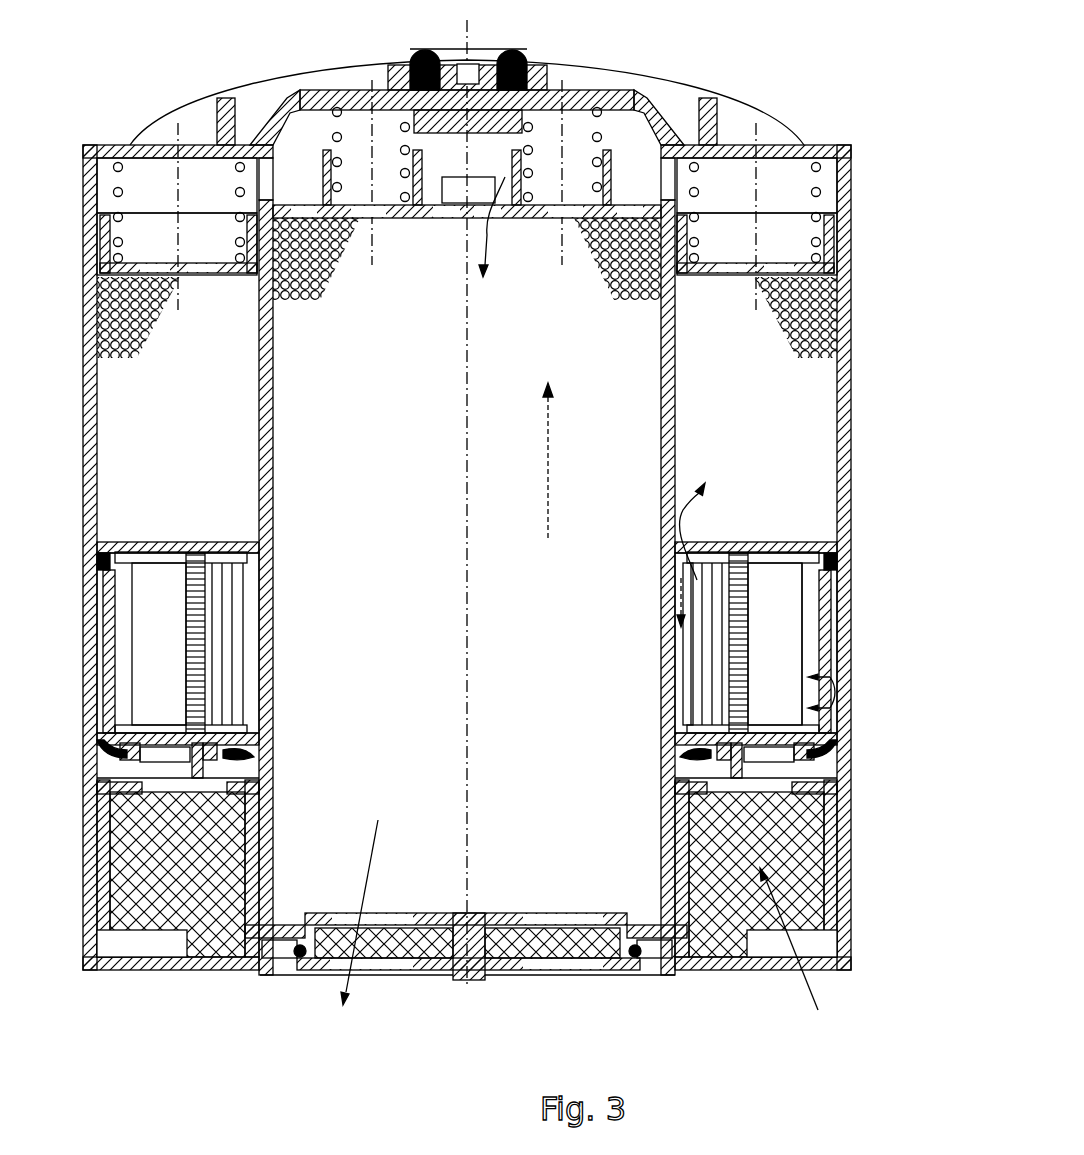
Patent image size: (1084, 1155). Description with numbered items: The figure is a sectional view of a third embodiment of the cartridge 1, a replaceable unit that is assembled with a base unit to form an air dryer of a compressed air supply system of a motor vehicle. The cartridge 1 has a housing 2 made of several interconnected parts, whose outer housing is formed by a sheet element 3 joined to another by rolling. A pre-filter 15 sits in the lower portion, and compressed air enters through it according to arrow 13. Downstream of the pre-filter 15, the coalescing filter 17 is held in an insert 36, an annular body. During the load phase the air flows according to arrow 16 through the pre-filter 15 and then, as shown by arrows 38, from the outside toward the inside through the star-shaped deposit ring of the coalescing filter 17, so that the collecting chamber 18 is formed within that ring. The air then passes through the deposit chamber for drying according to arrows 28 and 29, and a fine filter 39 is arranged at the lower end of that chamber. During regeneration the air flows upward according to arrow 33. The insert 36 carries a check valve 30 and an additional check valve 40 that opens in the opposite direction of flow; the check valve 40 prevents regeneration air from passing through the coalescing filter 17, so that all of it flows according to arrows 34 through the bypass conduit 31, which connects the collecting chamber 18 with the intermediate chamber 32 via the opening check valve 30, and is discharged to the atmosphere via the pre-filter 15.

The cartridge 1 is at (746, 75).
The housing 2 is at (815, 130).
The sheet element 3 is at (847, 203).
The arrow 13 is at (797, 943).
The pre-filter 15 is at (785, 823).
The arrow 16 is at (837, 693).
The coalescing filter 17 is at (772, 617).
The collecting chamber 18 is at (700, 710).
The arrow 28 is at (487, 233).
The arrow 29 is at (362, 937).
The check valve 30 is at (707, 750).
The bypass conduit 31 is at (685, 723).
The intermediate chamber 32 is at (772, 768).
The arrow 33 is at (548, 445).
The arrow 34 is at (680, 603).
The insert 36 is at (795, 543).
The arrow 38 is at (687, 515).
The fine filter 39 is at (578, 945).
The check valve 40 is at (837, 750).